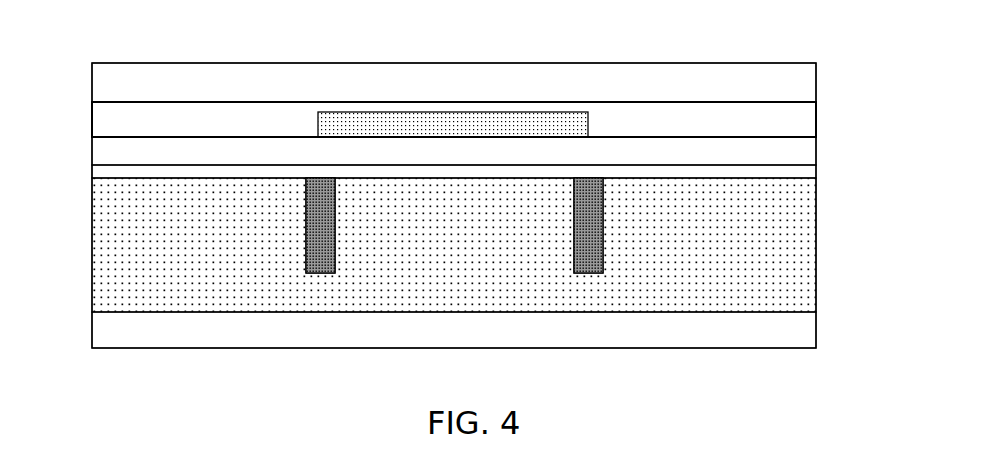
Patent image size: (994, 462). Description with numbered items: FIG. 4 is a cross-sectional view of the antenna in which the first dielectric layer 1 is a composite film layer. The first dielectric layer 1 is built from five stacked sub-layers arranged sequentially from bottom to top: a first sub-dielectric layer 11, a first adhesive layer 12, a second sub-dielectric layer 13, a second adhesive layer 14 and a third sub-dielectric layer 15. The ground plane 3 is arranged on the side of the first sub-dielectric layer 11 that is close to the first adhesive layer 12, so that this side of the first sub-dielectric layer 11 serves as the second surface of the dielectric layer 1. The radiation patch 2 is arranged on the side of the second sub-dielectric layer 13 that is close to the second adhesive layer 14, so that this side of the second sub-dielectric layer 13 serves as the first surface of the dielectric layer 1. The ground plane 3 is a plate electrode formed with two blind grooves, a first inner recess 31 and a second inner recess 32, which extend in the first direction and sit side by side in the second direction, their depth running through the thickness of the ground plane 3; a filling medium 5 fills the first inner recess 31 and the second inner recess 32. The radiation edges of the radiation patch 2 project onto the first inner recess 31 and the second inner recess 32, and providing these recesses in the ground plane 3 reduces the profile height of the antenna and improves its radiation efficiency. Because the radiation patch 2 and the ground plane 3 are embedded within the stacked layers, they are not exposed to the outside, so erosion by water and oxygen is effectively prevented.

The first dielectric layer 1 is at (904, 80).
The first sub-dielectric layer 11 is at (790, 337).
The first adhesive layer 12 is at (798, 177).
The second sub-dielectric layer 13 is at (800, 156).
The second adhesive layer 14 is at (802, 124).
The third sub-dielectric layer 15 is at (800, 91).
The radiation patch 2 is at (485, 118).
The ground plane 3 is at (124, 265).
The first inner recess 31 is at (333, 200).
The second inner recess 32 is at (603, 203).
The filling medium 5 is at (320, 232).